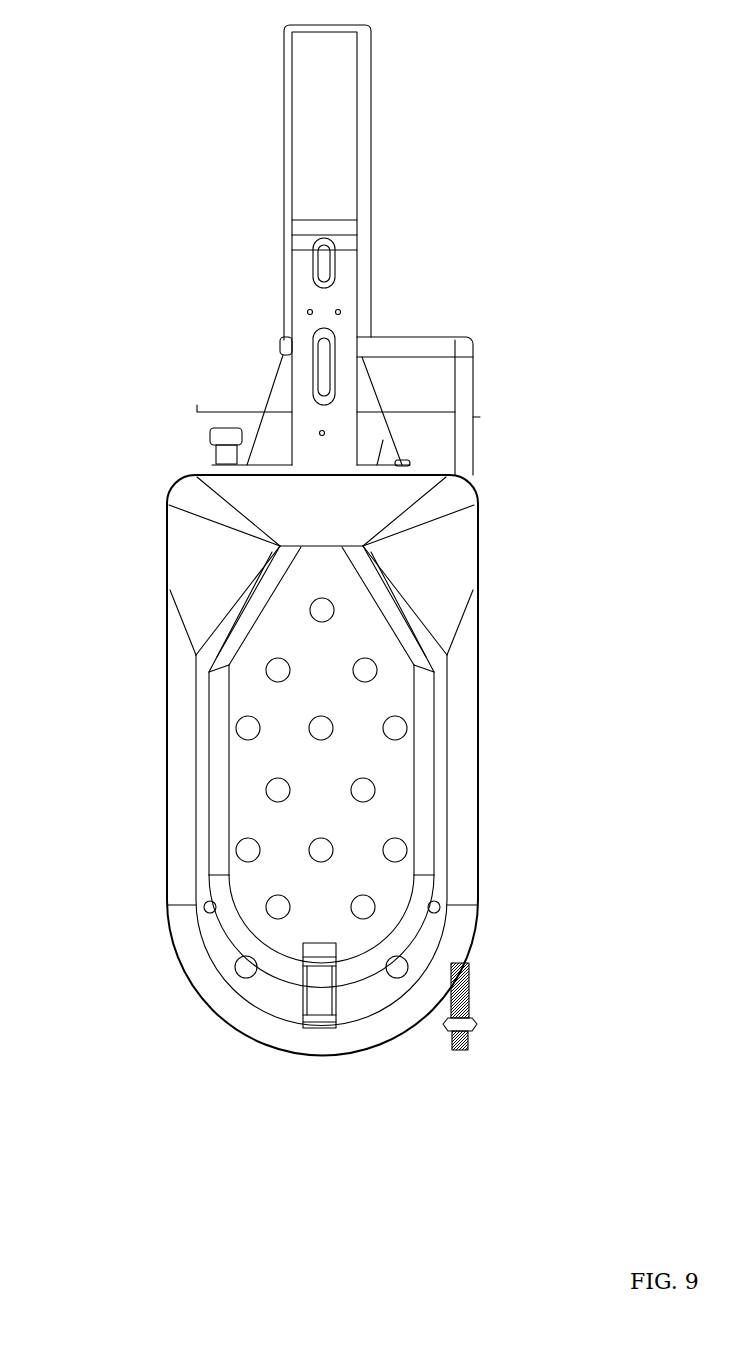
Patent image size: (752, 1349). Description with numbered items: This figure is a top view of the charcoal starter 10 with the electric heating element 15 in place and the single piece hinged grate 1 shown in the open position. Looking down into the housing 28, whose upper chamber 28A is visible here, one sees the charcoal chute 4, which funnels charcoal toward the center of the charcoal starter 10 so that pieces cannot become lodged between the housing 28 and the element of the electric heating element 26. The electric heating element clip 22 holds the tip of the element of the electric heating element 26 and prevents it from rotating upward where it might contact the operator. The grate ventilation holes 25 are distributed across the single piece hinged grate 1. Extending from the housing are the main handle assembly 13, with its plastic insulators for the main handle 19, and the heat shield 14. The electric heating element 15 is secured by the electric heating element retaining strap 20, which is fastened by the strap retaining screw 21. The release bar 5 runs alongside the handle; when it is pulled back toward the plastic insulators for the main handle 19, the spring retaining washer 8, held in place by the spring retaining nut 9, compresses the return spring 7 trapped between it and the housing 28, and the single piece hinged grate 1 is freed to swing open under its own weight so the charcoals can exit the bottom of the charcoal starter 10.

The single piece hinged grate 1 is at (256, 698).
The charcoal chute 4 is at (446, 557).
The release bar 5 is at (477, 417).
The return spring 7 is at (472, 972).
The spring retaining washer 8 is at (474, 1018).
The spring retaining nut 9 is at (480, 1033).
The charcoal starter 10 is at (325, 581).
The main handle assembly 13 is at (287, 285).
The heat shield 14 is at (203, 409).
The electric heating element 15 is at (283, 133).
The plastic insulators for the main handle 19 is at (321, 219).
The electric heating element retaining strap 20 is at (383, 440).
The strap retaining screw 21 is at (208, 440).
The electric heating element clip 22 is at (296, 1000).
The grate ventilation holes 25 is at (381, 784).
The element of the electric heating element 26 is at (443, 824).
The housing 28 is at (164, 738).
The upper chamber 28A is at (288, 875).